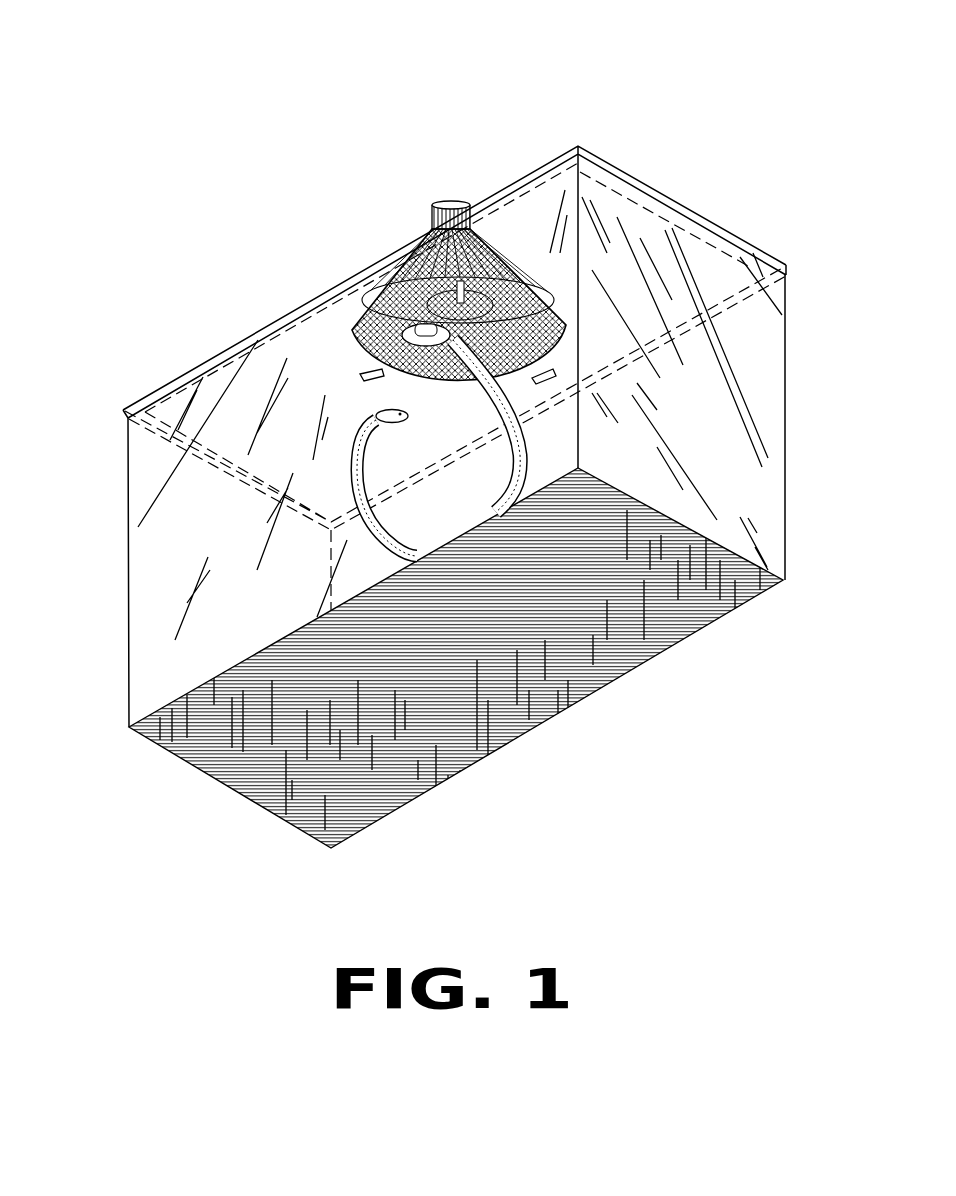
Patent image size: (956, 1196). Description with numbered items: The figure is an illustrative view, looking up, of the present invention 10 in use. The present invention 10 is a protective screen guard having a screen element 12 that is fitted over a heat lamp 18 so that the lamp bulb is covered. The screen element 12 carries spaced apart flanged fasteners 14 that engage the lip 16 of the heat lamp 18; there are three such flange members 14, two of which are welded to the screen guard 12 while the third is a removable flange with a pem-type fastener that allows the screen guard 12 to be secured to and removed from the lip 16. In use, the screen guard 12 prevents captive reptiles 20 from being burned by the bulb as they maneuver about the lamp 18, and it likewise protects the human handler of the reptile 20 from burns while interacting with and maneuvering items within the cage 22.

The present invention 10 is at (416, 152).
The screen element 12 is at (353, 302).
The flanged fasteners 14 is at (367, 377).
The lip 16 is at (352, 330).
The heat lamp 18 is at (459, 238).
The captive reptiles 20 is at (356, 500).
The cage 22 is at (623, 170).